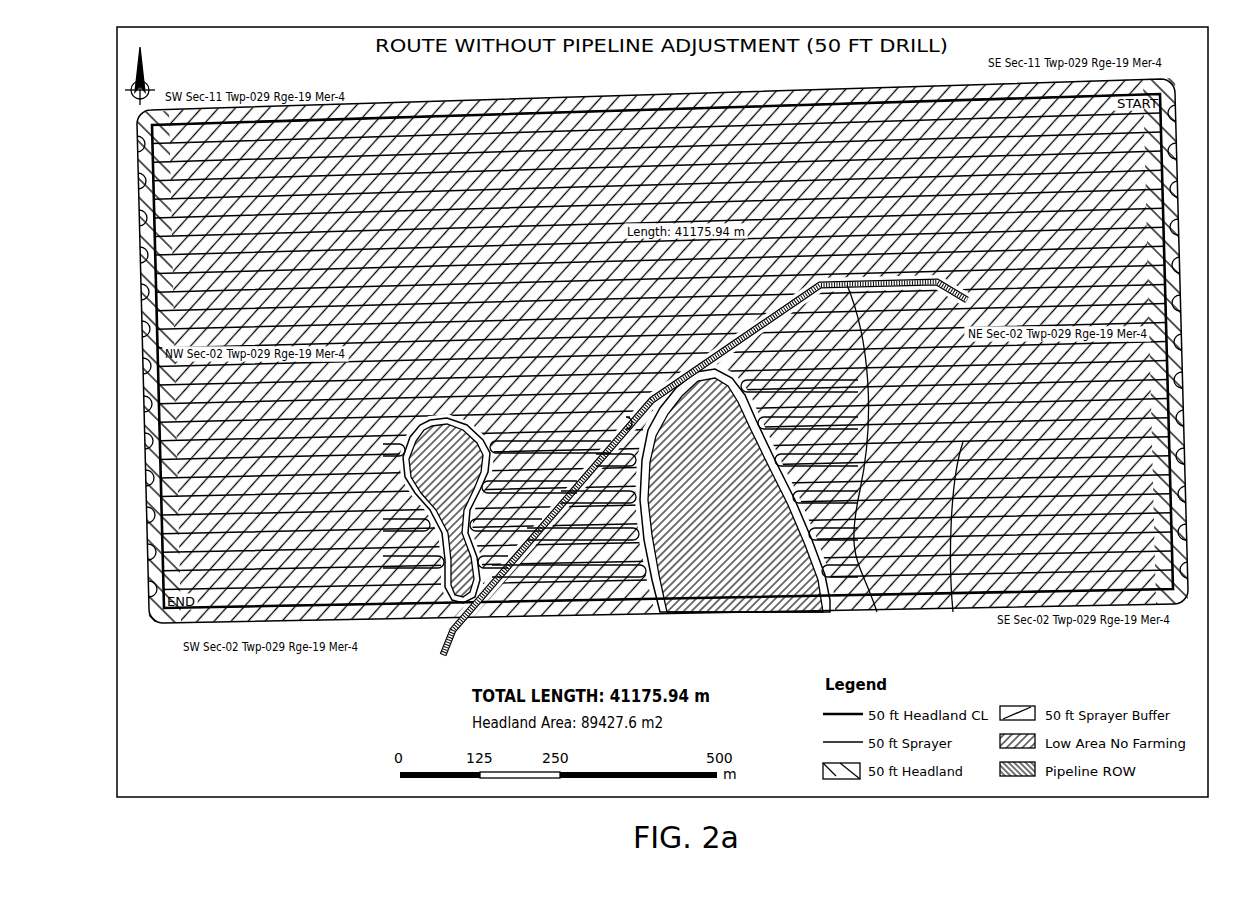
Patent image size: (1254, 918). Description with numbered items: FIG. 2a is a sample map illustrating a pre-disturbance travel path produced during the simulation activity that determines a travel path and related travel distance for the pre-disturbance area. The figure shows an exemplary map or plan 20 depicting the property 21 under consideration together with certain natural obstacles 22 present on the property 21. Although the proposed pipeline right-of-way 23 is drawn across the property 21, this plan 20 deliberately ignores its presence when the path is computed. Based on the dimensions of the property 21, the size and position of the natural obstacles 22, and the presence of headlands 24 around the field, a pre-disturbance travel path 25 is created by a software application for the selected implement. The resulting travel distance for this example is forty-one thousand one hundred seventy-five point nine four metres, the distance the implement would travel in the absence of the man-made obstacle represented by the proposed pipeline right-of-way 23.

The map or plan 20 is at (1166, 808).
The property 21 is at (953, 612).
The natural obstacles 22 is at (450, 493).
The proposed pipeline right-of-way 23 is at (869, 612).
The headlands 24 is at (1165, 506).
The pre-disturbance travel path 25 is at (496, 598).